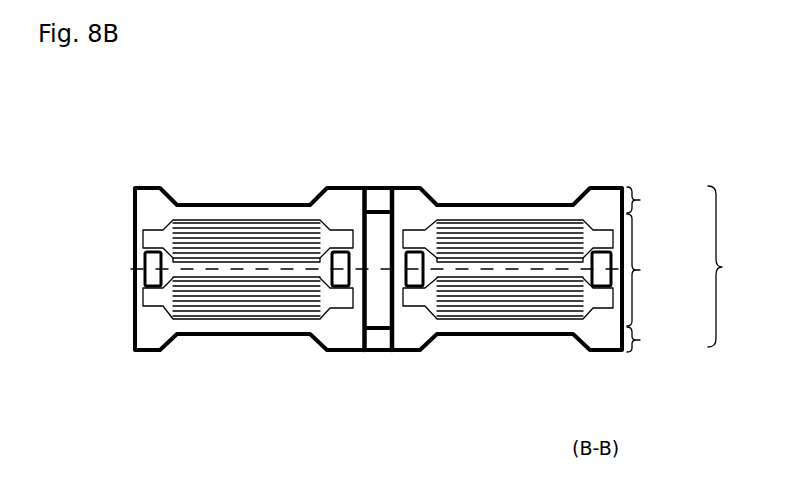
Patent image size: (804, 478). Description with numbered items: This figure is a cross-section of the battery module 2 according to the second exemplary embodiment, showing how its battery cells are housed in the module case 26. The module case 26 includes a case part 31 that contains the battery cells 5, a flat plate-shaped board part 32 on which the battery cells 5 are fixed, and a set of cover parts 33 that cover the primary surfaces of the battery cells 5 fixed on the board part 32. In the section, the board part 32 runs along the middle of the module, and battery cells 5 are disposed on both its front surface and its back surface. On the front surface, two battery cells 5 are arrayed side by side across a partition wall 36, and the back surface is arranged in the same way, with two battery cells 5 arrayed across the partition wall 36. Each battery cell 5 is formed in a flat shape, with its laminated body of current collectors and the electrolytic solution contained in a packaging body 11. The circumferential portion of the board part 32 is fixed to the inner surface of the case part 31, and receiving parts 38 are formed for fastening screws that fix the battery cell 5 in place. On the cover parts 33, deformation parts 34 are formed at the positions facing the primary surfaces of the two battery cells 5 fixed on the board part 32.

The battery module 2 is at (652, 132).
The battery cell 5 is at (243, 234).
The packaging body 11 is at (213, 222).
The module case 26 is at (729, 266).
The case part 31 is at (646, 270).
The board part 32 is at (584, 270).
The cover part 33 is at (646, 269).
The deformation part 34 is at (287, 206).
The partition wall 36 is at (378, 334).
The receiving part 38 is at (152, 264).